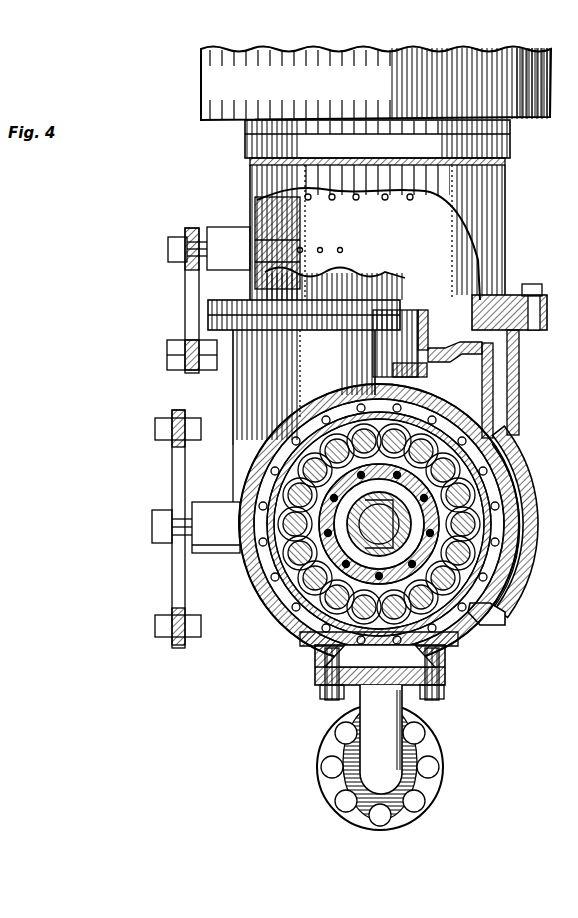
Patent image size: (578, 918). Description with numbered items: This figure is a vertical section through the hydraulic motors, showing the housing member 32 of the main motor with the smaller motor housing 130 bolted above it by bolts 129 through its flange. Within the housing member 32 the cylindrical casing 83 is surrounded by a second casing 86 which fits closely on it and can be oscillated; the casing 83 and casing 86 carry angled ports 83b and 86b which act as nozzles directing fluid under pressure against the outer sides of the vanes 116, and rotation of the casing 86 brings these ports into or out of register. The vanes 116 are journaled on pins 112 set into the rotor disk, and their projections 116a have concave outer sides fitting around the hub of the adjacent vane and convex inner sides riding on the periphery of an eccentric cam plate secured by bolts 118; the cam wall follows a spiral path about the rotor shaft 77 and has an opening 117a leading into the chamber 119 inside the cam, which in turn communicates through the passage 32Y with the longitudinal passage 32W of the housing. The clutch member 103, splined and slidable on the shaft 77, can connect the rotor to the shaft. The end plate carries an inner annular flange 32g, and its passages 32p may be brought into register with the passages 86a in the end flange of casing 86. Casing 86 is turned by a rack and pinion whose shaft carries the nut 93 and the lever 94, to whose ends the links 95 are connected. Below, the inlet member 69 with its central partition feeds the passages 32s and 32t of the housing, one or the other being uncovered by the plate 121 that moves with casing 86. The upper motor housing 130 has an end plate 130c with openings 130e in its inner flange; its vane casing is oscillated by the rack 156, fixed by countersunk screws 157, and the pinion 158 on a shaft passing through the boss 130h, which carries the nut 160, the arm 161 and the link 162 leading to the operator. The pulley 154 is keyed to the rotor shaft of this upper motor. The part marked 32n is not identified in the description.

The pulley 154 is at (218, 112).
The rack 156 is at (262, 192).
The housing member 130 is at (492, 188).
The boss 130h is at (218, 232).
The screws 157 is at (256, 240).
The pinion 158 is at (262, 276).
The nut 160 is at (168, 249).
The arm 161 is at (186, 295).
The link 162 is at (186, 343).
The openings 130e is at (476, 300).
The bolts 129 is at (536, 315).
The passage 32Y is at (506, 372).
The end plate 130c is at (430, 362).
The casing arc 32n is at (528, 470).
The passage 32W is at (520, 605).
The ports 86b is at (476, 600).
The casing 83 is at (340, 412).
The housing member 32 is at (302, 406).
The passages 32p is at (300, 441).
The passages 86a is at (262, 462).
The vanes 116 is at (262, 480).
The projections 116a is at (295, 585).
The chamber 119 is at (268, 556).
The clutch member 103 is at (262, 568).
The opening 117a is at (379, 526).
The pins 112 is at (379, 524).
The bolts 118 is at (392, 523).
The rotor shaft 77 is at (362, 530).
The lever 94 is at (172, 470).
The links 95 is at (172, 418).
The nut 93 is at (152, 528).
The casing 86 is at (242, 497).
The inner annular flange 32g is at (227, 541).
The plate 121 is at (318, 652).
The passage 32t is at (316, 672).
The ports 83b is at (440, 655).
The passage 32s is at (425, 690).
The inlet member 69 is at (378, 700).